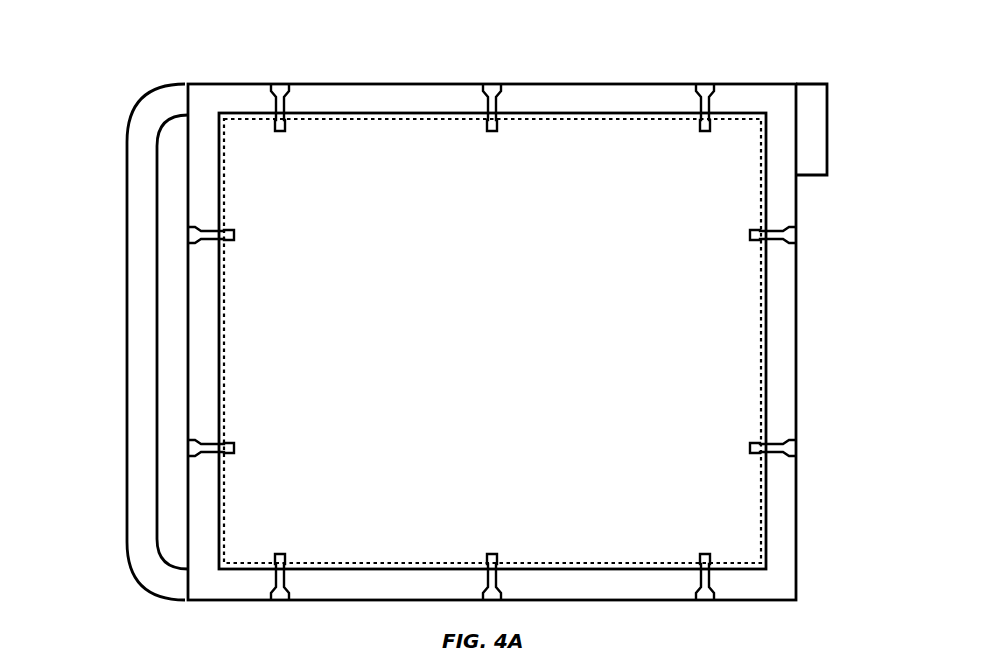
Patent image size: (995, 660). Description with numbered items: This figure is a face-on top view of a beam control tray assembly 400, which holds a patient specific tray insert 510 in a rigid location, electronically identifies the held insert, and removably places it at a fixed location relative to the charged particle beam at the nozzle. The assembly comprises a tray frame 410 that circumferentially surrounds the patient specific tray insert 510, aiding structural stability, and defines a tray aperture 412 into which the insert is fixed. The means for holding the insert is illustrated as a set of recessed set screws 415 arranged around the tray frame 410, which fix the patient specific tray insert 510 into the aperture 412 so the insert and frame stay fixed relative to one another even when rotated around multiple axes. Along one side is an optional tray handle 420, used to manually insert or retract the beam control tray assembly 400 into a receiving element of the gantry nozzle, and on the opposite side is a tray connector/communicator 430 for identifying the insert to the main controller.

The beam control tray assembly 400 is at (786, 44).
The tray frame 410 is at (605, 84).
The tray aperture 412 is at (512, 352).
The recessed set screws 415 is at (283, 84).
The tray handle 420 is at (150, 96).
The tray connector/communicator 430 is at (827, 150).
The patient specific tray insert 510 is at (332, 563).